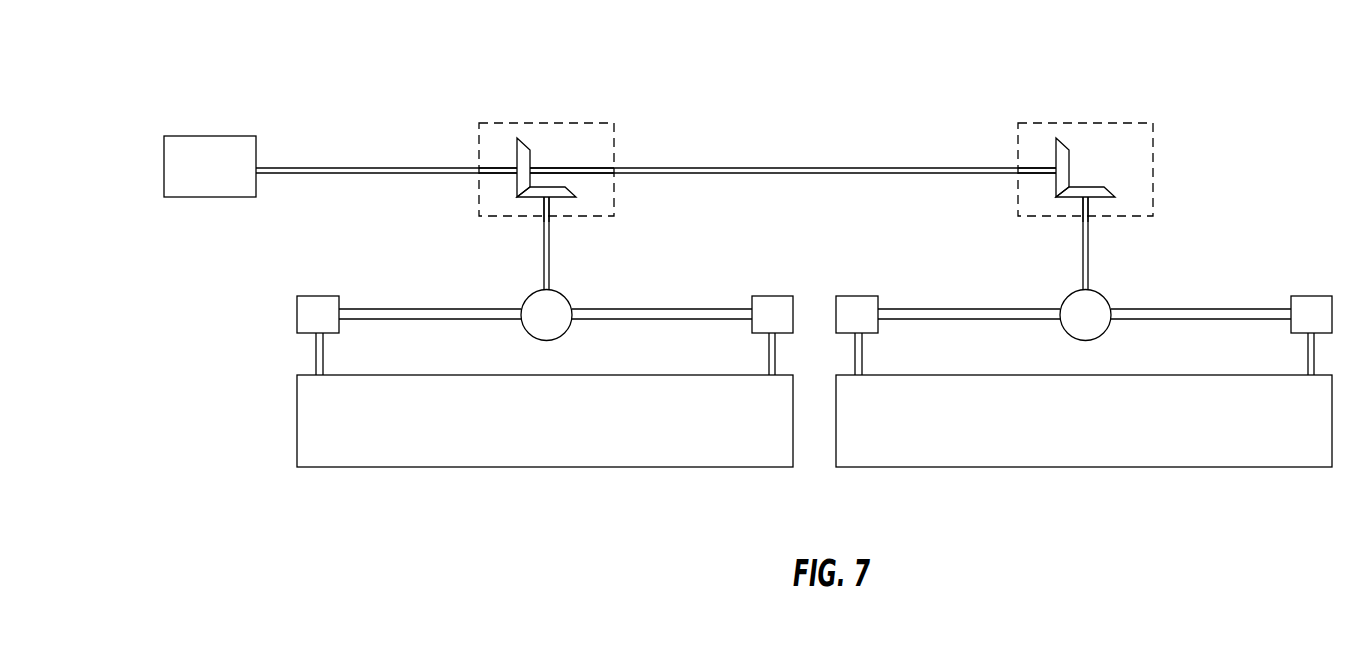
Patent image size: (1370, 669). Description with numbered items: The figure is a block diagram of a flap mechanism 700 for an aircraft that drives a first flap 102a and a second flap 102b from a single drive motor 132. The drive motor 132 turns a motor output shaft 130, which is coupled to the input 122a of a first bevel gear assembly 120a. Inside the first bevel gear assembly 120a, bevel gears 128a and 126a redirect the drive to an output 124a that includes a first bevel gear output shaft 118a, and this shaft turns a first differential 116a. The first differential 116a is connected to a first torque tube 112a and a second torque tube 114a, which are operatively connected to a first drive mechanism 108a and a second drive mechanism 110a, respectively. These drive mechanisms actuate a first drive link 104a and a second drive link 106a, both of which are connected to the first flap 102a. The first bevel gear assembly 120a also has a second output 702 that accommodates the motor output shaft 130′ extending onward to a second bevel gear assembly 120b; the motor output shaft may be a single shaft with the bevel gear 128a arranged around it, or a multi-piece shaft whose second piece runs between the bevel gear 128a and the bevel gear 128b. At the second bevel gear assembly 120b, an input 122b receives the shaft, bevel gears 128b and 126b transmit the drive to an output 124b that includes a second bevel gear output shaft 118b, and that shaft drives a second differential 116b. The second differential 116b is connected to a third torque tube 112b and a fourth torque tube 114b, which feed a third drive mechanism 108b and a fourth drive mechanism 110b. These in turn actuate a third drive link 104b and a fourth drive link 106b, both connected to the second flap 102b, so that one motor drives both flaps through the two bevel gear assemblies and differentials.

The flap mechanism 700 is at (998, 50).
The drive motor 132 is at (221, 136).
The motor output shaft 130 is at (367, 167).
The motor output shaft 130′ is at (860, 163).
The second output 702 is at (614, 165).
The first bevel gear assembly 120a is at (614, 124).
The second bevel gear assembly 120b is at (1128, 148).
The input 122a is at (479, 168).
The input 122b is at (1011, 130).
The bevel gear 128a is at (525, 145).
The bevel gear 128b is at (1098, 139).
The bevel gear 126a is at (570, 188).
The bevel gear 126b is at (1139, 198).
The output 124a is at (543, 218).
The output 124b is at (1058, 236).
The first bevel gear output shaft 118a is at (549, 250).
The second bevel gear output shaft 118b is at (1123, 243).
The first differential 116a is at (568, 297).
The second differential 116b is at (1118, 307).
The first torque tube 112a is at (434, 308).
The third torque tube 112b is at (969, 288).
The second torque tube 114a is at (666, 308).
The fourth torque tube 114b is at (1201, 285).
The first drive mechanism 108a is at (317, 296).
The third drive mechanism 108b is at (881, 294).
The second drive mechanism 110a is at (773, 296).
The fourth drive mechanism 110b is at (1325, 286).
The first drive link 104a is at (323, 355).
The third drive link 104b is at (899, 354).
The second drive link 106a is at (767, 348).
The fourth drive link 106b is at (1269, 354).
The first flap 102a is at (573, 456).
The second flap 102b is at (1084, 445).